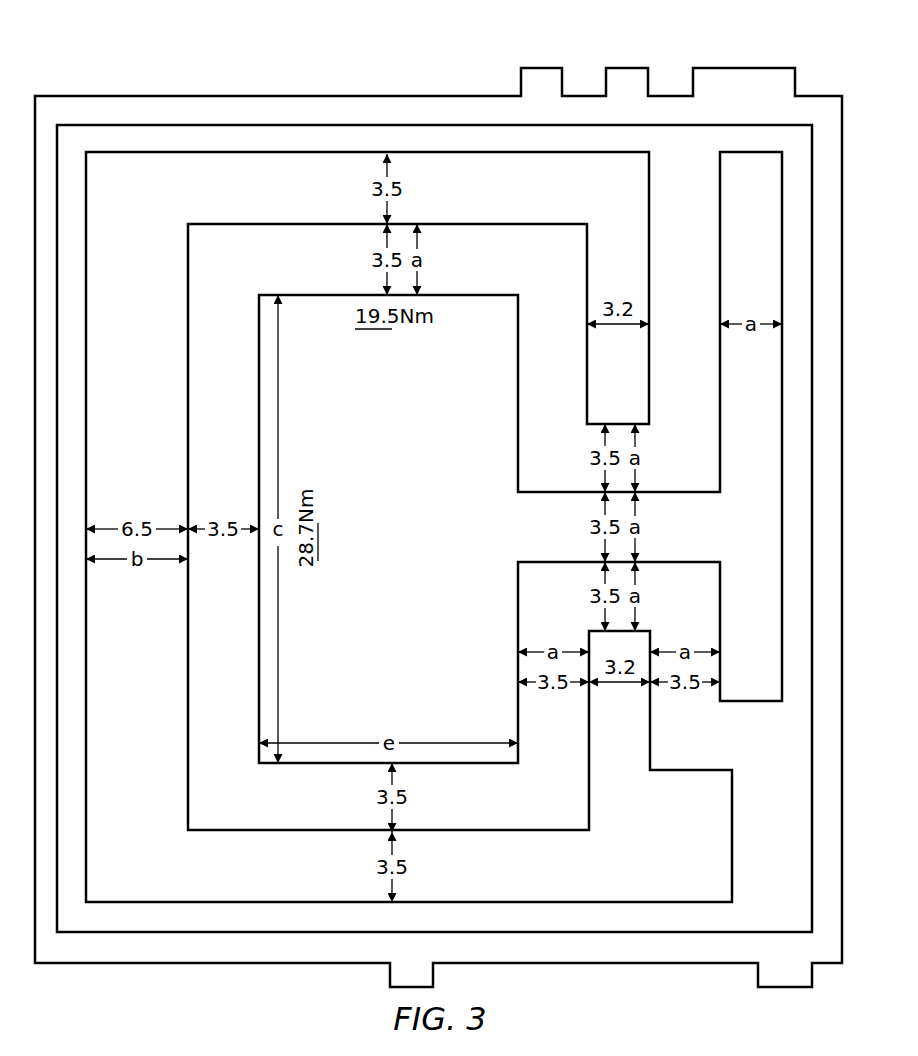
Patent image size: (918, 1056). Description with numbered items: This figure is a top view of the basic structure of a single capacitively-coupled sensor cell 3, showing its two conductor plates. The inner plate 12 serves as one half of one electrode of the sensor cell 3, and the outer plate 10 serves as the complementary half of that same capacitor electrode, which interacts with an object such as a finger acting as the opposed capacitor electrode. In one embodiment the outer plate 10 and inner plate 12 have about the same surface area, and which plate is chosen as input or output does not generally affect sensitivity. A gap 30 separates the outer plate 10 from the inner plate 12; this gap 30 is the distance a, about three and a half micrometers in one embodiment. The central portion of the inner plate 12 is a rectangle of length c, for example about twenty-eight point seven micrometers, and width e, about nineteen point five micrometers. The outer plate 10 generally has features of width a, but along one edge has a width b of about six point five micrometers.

The capacitively-coupled sensor cell 3 is at (158, 46).
The outer plate 10 is at (500, 201).
The inner plate 12 is at (738, 541).
The gap 30 is at (671, 308).